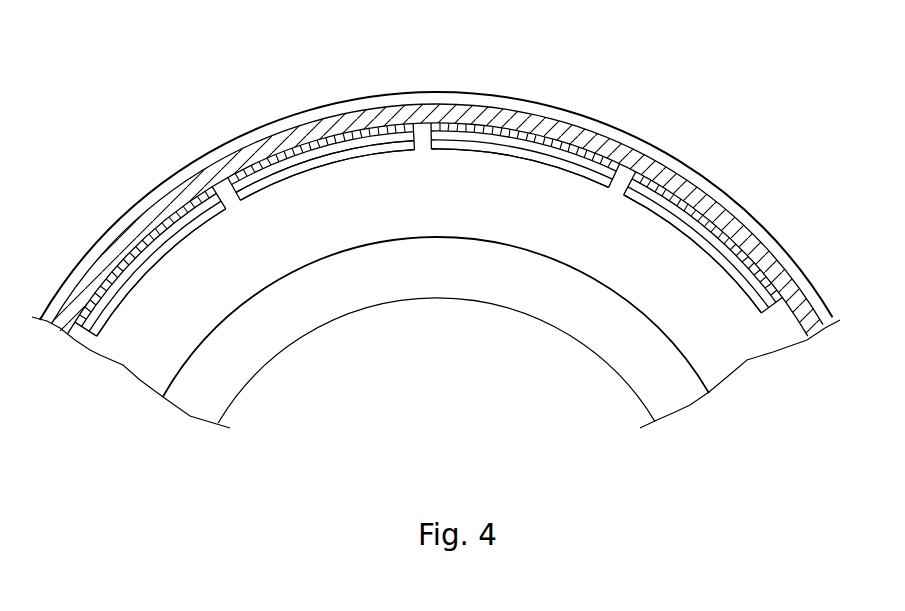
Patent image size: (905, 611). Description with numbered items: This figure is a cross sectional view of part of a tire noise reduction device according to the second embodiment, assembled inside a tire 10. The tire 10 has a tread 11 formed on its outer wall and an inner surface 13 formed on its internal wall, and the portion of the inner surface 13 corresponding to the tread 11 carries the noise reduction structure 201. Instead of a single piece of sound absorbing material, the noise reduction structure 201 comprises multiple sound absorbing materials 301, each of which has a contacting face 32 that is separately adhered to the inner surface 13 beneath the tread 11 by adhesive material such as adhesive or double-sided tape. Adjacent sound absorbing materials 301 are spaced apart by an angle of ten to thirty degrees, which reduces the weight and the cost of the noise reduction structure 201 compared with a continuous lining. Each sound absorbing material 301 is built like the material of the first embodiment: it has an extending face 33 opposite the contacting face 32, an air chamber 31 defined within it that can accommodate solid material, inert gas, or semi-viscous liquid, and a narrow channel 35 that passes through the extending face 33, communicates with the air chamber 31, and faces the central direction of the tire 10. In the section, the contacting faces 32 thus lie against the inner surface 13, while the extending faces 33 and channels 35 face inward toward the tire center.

The tire 10 is at (769, 389).
The tread 11 is at (384, 93).
The inner surface 13 is at (438, 181).
The contacting face 32 is at (510, 113).
The air chamber 31 is at (429, 235).
The extending face 33 is at (537, 147).
The channel 35 is at (586, 165).
The sound absorbing materials 301 is at (139, 283).
The noise reduction structure 201 is at (398, 175).